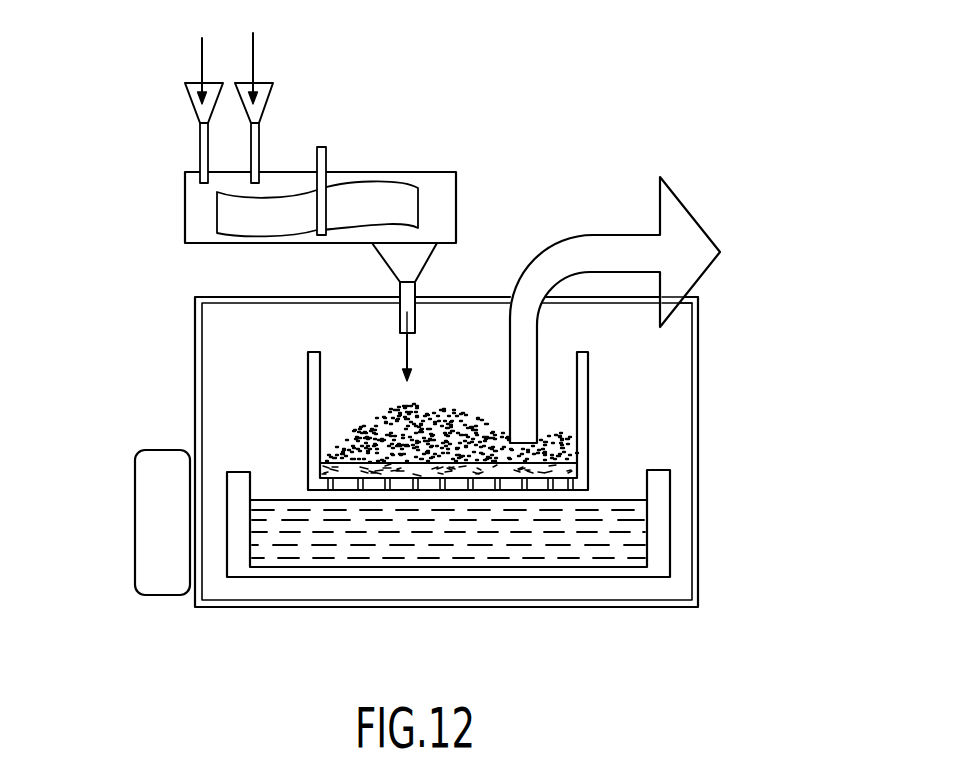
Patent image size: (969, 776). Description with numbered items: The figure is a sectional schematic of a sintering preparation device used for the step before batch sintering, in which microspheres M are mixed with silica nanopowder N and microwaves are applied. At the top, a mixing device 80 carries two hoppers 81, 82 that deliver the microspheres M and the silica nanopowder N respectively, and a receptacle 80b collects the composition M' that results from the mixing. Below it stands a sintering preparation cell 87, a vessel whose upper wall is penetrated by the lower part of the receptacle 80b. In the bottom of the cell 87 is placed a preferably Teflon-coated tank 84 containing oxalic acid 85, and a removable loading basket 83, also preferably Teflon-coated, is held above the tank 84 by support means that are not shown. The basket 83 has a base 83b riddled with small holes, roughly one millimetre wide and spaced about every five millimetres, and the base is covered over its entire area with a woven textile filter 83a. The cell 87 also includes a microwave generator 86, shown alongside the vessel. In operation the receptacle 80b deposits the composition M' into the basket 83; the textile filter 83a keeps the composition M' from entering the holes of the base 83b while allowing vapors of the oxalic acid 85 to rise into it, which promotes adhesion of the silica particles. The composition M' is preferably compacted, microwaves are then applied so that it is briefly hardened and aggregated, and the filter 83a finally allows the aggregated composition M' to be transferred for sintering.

The mixing device 80 is at (183, 208).
The receptacle 80b is at (390, 250).
The hopper 81 is at (188, 106).
The hopper 82 is at (267, 106).
The removable loading basket 83 is at (304, 407).
The textile filter 83a is at (432, 473).
The base 83b is at (347, 483).
The tank 84 is at (228, 556).
The oxalic acid 85 is at (307, 543).
The microwave generator 86 is at (152, 490).
The sintering preparation cell 87 is at (705, 418).
The microspheres M is at (180, 54).
The silica nanopowder N is at (255, 50).
The composition M' is at (565, 307).